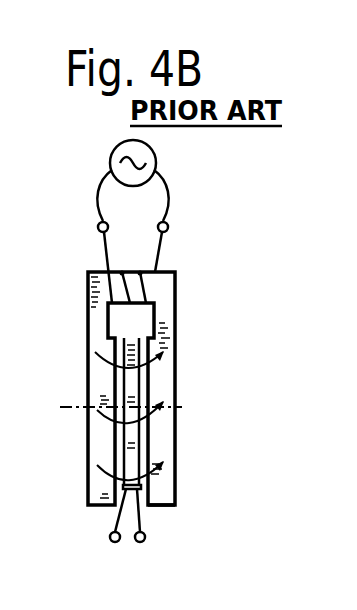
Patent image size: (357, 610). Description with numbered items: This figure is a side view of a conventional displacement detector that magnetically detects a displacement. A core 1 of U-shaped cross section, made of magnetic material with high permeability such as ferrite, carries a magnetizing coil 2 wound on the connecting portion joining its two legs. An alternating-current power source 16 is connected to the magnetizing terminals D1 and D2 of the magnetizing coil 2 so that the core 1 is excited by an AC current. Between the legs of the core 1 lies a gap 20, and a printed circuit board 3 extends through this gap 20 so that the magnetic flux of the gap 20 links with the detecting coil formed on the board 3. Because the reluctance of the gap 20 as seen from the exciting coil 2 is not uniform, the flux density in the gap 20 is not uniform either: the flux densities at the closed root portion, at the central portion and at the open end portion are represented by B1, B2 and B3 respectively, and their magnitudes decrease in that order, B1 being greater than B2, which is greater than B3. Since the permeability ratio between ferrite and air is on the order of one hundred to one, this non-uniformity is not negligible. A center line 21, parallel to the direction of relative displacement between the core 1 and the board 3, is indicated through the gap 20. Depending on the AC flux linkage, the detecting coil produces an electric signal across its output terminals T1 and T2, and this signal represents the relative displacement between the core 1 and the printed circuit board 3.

The core 1 is at (164, 303).
The magnetizing coil 2 is at (88, 289).
The printed circuit board 3 is at (122, 438).
The alternating-current power source 16 is at (157, 158).
The gap 20 is at (142, 505).
The center line 21 is at (70, 405).
The flux density at closed root portion B1 is at (152, 349).
The flux density at central portion B2 is at (153, 408).
The flux density at open end portion B3 is at (153, 466).
The magnetizing terminal D1 is at (89, 236).
The magnetizing terminal D2 is at (180, 221).
The output terminal T1 is at (111, 541).
The output terminal T2 is at (143, 542).